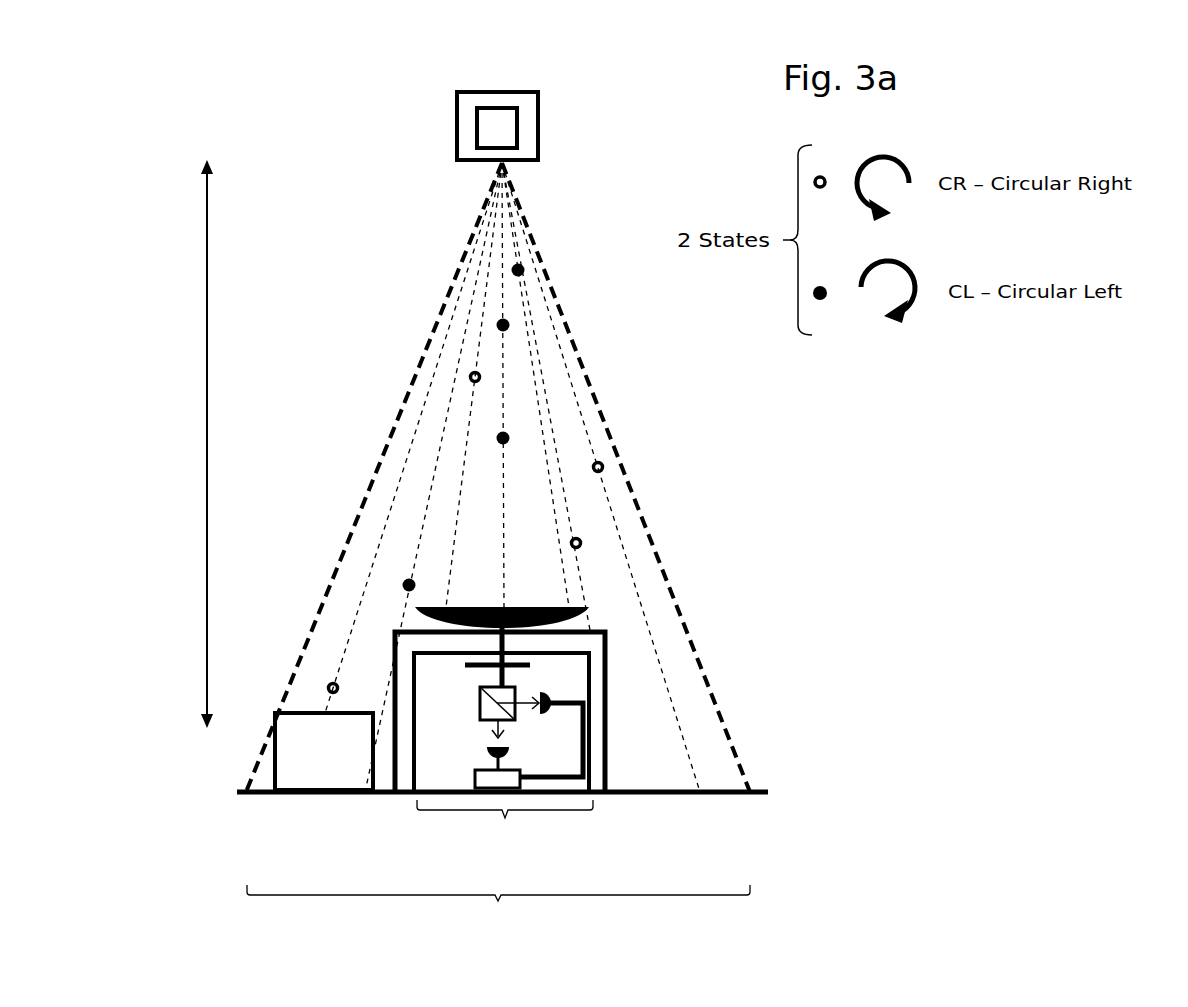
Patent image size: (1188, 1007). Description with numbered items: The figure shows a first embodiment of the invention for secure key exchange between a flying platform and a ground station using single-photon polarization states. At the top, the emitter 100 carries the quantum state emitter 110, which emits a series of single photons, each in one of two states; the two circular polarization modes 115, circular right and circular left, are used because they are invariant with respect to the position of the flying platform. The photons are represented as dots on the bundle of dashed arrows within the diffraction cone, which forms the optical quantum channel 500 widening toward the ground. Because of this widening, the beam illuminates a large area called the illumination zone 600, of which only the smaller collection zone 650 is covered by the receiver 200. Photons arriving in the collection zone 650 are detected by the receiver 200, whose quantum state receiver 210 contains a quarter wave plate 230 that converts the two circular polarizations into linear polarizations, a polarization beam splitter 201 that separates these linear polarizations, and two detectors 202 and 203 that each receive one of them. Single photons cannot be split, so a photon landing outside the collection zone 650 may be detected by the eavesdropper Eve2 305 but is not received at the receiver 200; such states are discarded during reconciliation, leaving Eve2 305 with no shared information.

The emitter 100 is at (580, 126).
The quantum state emitter 110 is at (478, 130).
The circular polarization modes 115 is at (498, 477).
The optical quantum channel 500 is at (191, 444).
The Eve2 305 is at (324, 751).
The receiver 200 is at (608, 745).
The quantum state receiver 210 is at (592, 717).
The quarter wave plate 230 is at (530, 662).
The polarization beam splitter 201 is at (483, 712).
The detector 202 is at (476, 764).
The detector 203 is at (551, 723).
The collection zone 650 is at (505, 841).
The illumination zone 600 is at (498, 923).